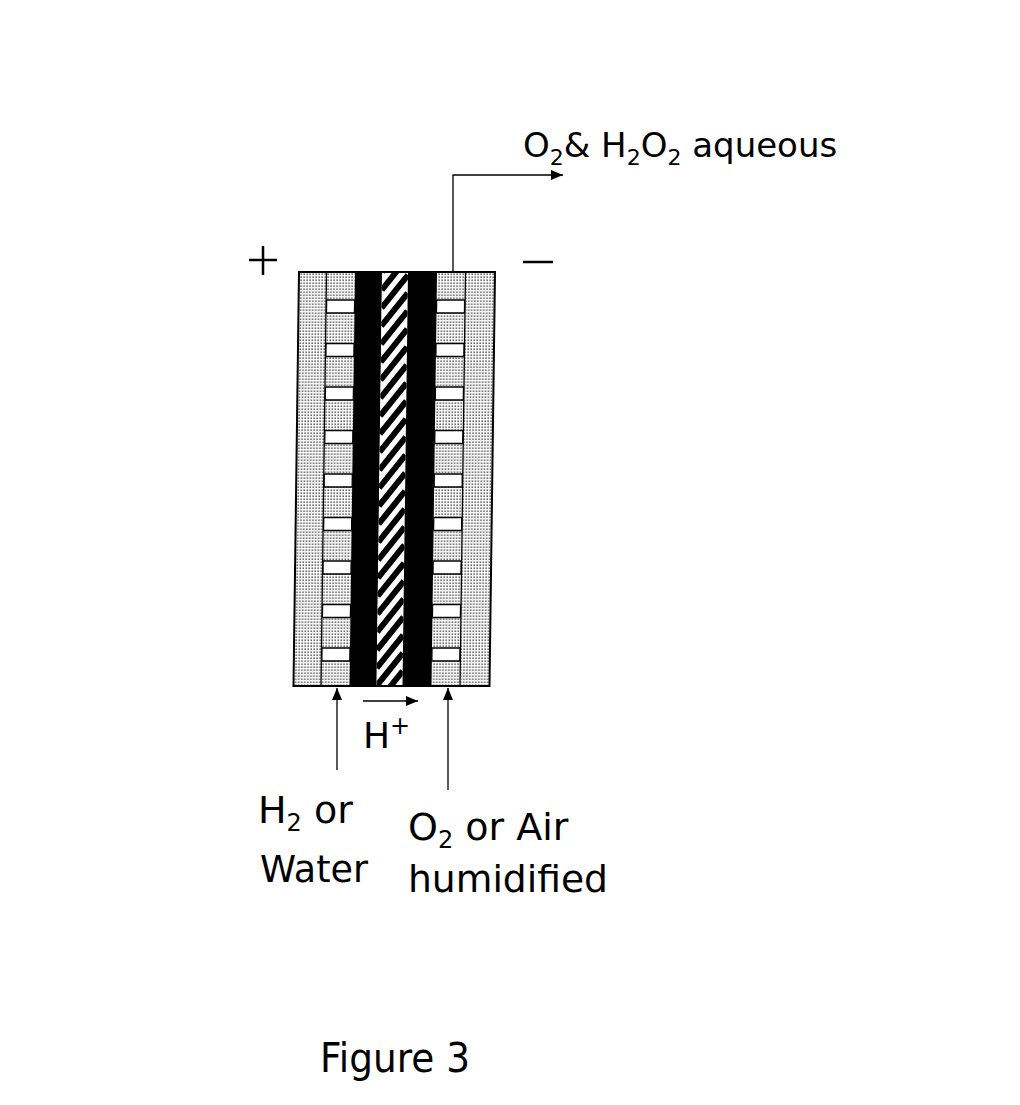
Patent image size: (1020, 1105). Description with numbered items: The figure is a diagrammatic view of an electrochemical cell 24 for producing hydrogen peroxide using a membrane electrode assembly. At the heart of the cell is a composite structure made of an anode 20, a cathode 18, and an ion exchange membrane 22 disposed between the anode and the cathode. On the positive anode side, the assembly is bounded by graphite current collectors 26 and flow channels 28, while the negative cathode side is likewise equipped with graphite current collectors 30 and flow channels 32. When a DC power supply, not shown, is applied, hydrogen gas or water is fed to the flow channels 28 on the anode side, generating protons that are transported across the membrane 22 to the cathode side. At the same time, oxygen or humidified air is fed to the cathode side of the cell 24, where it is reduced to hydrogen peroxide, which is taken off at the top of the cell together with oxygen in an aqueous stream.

The cathode layer 18 is at (528, 355).
The anode layer 20 is at (266, 386).
The ion exchange membrane 22 is at (395, 272).
The electrochemical cell 24 is at (548, 370).
The graphite current collectors 26 is at (305, 617).
The flow channels 28 is at (337, 560).
The graphite current collectors 30 is at (482, 592).
The flow channels 32 is at (450, 480).